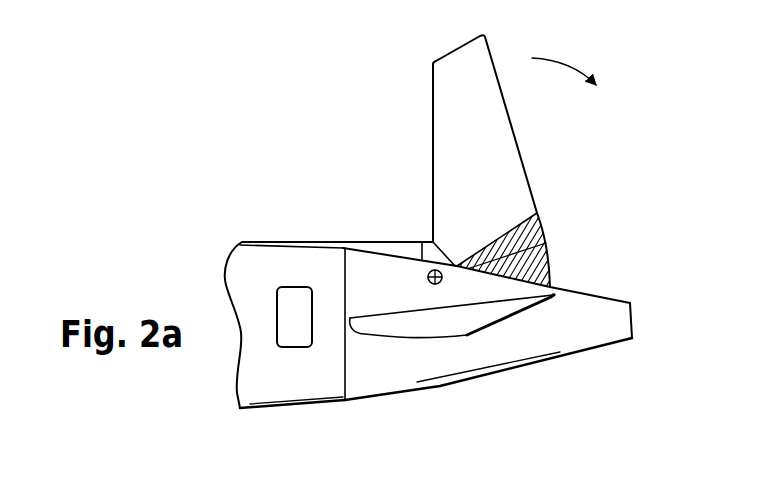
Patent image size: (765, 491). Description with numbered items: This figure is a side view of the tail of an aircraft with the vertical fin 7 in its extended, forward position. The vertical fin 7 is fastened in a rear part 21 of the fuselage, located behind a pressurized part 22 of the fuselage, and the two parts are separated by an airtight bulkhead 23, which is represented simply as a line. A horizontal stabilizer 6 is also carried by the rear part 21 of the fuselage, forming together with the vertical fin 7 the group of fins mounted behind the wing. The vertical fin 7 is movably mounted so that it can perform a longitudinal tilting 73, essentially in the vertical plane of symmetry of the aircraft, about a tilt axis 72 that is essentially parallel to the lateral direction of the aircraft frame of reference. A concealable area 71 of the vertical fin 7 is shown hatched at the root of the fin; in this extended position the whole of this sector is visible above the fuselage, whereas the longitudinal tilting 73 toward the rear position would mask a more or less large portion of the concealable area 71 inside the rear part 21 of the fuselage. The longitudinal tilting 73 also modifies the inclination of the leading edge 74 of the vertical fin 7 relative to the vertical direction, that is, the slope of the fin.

The horizontal stabilizer 6 is at (505, 313).
The vertical fin 7 is at (477, 167).
The rear part of the fuselage 21 is at (393, 370).
The pressurized part of the fuselage 22 is at (290, 383).
The airtight bulkhead 23 is at (345, 270).
The concealable area 71 is at (548, 252).
The tilt axis 72 is at (424, 278).
The longitudinal tilting 73 is at (572, 65).
The leading edge 74 is at (433, 100).